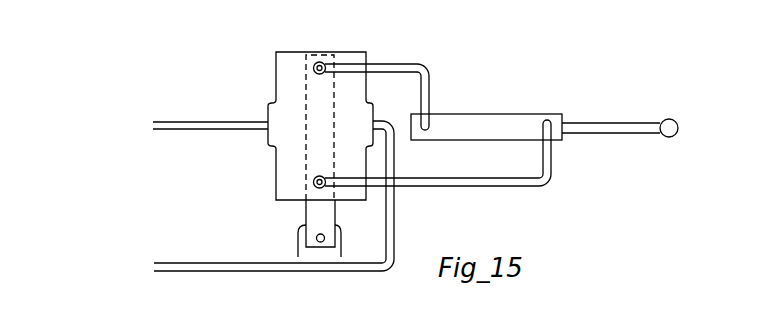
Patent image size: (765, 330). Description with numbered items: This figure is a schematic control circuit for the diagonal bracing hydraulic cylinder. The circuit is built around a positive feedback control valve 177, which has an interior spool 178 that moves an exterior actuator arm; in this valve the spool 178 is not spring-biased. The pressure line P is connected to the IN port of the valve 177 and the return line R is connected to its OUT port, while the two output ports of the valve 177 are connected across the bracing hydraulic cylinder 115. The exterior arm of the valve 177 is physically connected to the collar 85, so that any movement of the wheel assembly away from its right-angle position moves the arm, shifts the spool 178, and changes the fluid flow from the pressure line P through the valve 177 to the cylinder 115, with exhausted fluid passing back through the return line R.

The positive feedback control valve 177 is at (276, 67).
The interior spool 178 is at (305, 155).
The collar 85 is at (341, 233).
The diagonal bracing member 115 is at (478, 114).
The pressure line P is at (183, 121).
The return line R is at (173, 271).